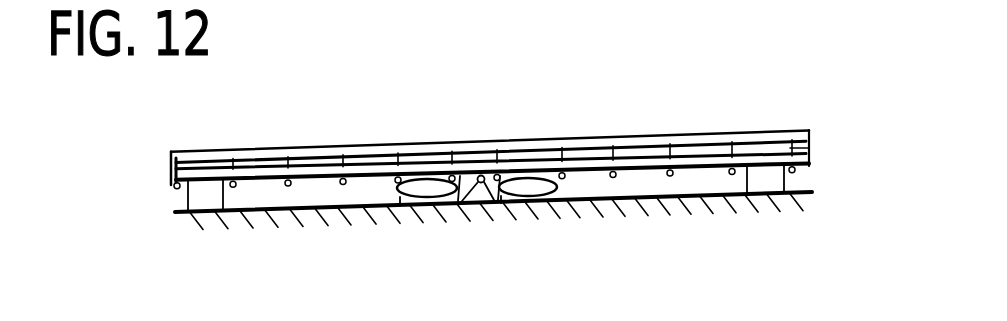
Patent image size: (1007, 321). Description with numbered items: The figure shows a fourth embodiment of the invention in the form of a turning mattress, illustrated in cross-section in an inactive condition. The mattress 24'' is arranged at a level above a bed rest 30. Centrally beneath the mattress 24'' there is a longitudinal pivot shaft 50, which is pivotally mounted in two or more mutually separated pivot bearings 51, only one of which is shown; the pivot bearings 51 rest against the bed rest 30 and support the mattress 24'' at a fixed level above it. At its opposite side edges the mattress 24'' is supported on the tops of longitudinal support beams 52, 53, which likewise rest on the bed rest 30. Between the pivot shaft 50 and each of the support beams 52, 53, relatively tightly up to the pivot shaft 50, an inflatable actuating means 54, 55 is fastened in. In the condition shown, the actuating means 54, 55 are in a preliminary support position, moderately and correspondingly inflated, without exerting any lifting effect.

The mattress 24'' is at (490, 99).
The inflatable actuating means 54 is at (411, 152).
The pivot bearing 51 is at (455, 163).
The longitudinal pivot shaft 50 is at (482, 176).
The inflatable actuating means 55 is at (541, 177).
The longitudinal support beam 52 is at (195, 200).
The longitudinal support beam 53 is at (785, 177).
The bed rest 30 is at (655, 200).